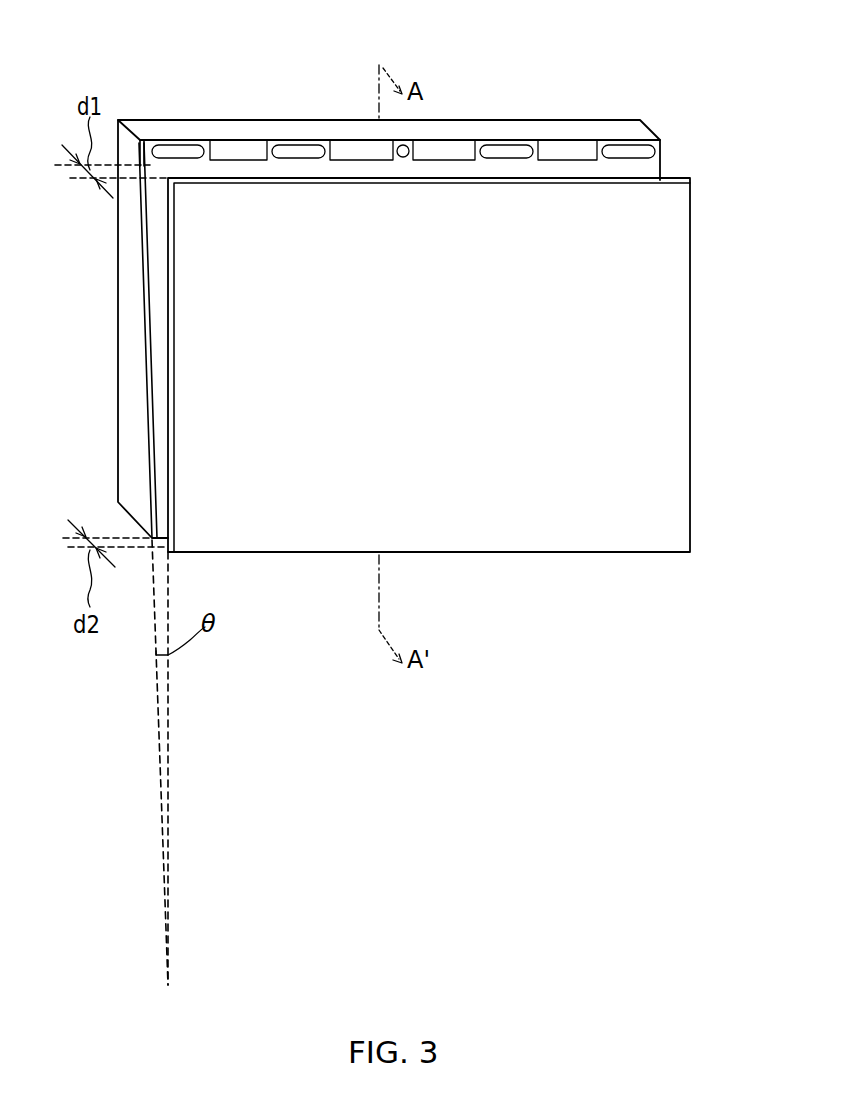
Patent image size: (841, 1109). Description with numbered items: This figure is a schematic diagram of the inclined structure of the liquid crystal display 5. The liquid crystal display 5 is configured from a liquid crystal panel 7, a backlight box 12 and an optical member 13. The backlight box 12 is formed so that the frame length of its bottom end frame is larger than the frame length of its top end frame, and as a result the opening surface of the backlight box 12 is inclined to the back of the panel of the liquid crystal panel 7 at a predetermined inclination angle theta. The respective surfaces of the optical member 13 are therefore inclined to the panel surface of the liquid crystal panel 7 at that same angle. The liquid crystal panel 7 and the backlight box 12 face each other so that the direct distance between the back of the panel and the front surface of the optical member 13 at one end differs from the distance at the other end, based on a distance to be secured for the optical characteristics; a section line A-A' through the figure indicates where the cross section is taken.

The liquid crystal display 5 is at (675, 34).
The liquid crystal panel 7 is at (475, 545).
The backlight box 12 is at (515, 130).
The optical member 13 is at (142, 345).